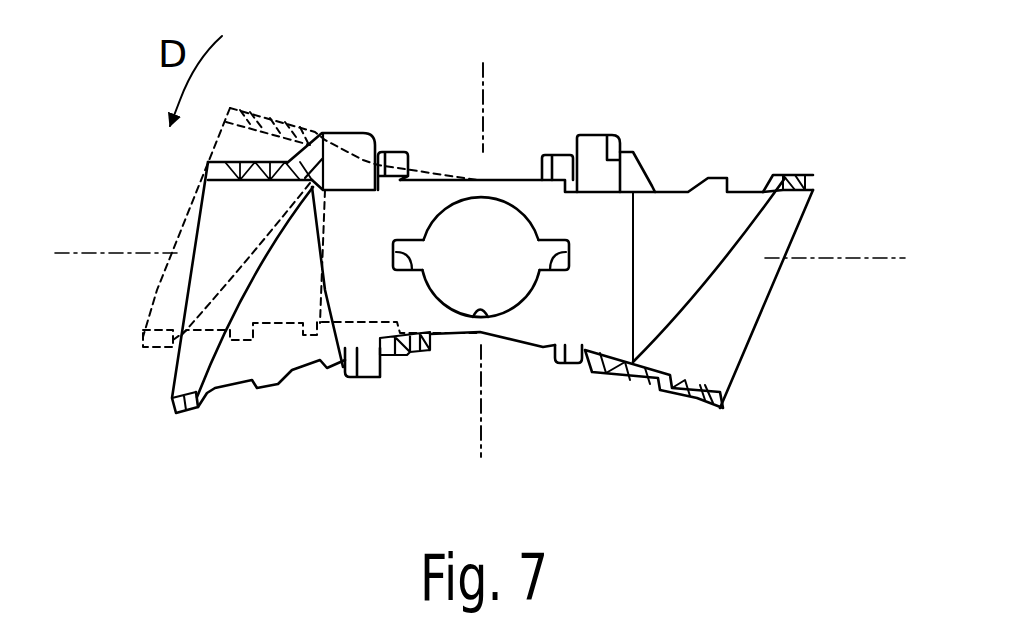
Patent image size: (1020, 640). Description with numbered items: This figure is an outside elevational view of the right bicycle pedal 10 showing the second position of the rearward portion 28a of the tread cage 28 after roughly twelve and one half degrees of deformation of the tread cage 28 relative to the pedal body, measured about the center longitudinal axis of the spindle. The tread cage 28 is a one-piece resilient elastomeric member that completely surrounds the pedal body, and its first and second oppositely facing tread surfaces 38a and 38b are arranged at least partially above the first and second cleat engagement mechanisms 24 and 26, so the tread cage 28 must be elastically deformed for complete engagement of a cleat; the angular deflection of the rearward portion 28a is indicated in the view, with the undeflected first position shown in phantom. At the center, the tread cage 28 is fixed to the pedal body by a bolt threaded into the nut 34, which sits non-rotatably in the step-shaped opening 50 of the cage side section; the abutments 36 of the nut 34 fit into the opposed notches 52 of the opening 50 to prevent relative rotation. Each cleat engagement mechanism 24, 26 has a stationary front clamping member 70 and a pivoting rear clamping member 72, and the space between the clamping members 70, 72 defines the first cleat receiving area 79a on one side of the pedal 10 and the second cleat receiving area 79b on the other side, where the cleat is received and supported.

The bicycle pedal 10 is at (720, 103).
The first cleat engagement mechanism 24 is at (334, 125).
The second cleat engagement mechanism 26 is at (400, 385).
The tread cage 28 is at (192, 209).
The rearward portion of the tread cage 28a is at (200, 163).
The nut 34 is at (507, 297).
The abutments 36 is at (412, 238).
The first tread surface 38a is at (802, 172).
The second tread surface 38b is at (708, 410).
The opening 50 is at (490, 318).
The notches 52 is at (396, 256).
The front clamping member 70 is at (593, 134).
The rear clamping member 72 is at (360, 135).
The first cleat receiving area 79a is at (499, 160).
The second cleat receiving area 79b is at (459, 360).